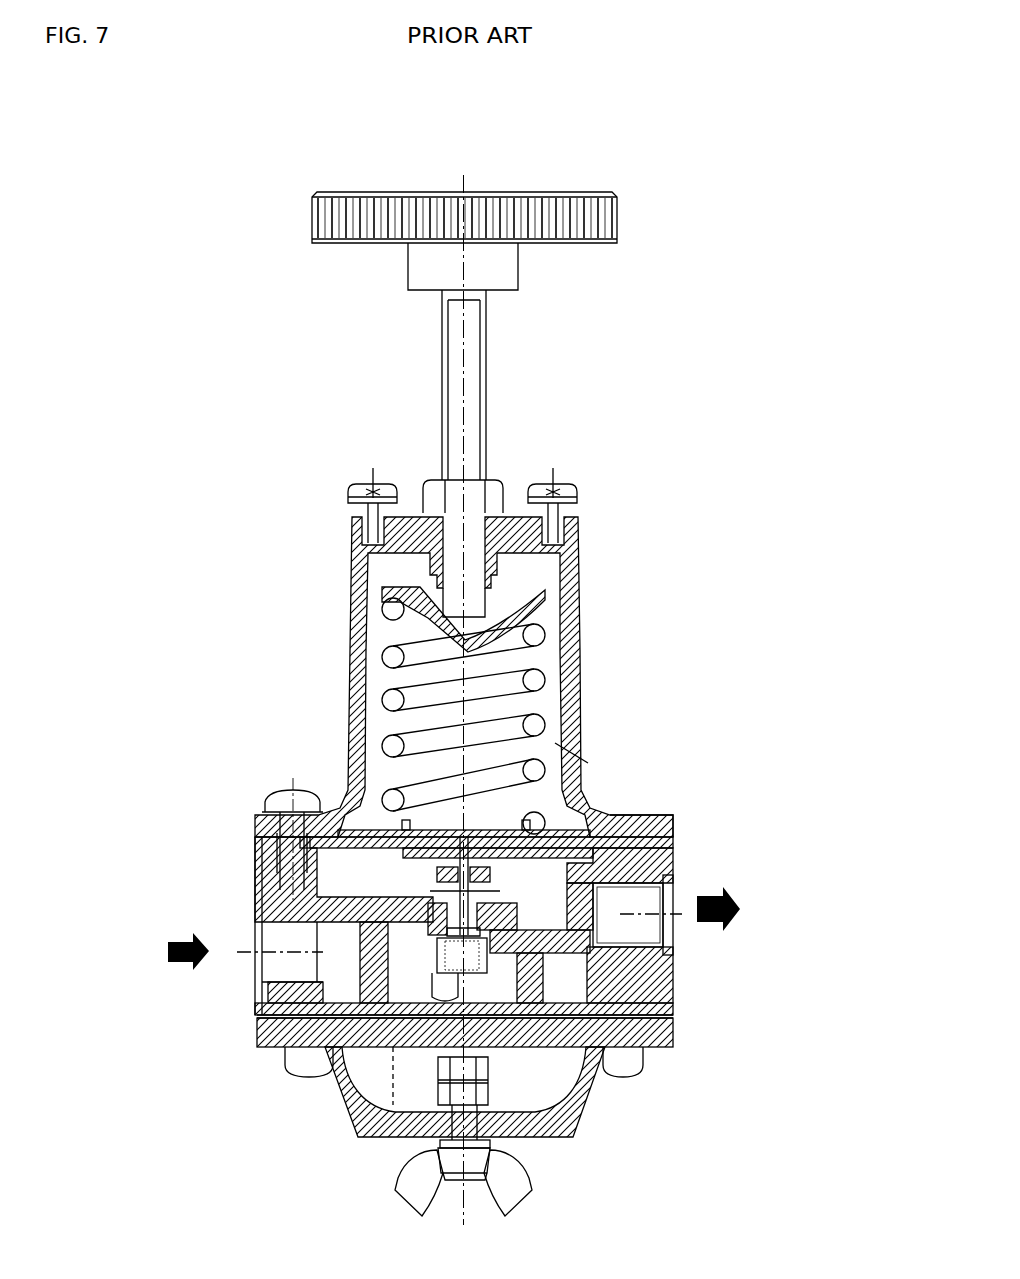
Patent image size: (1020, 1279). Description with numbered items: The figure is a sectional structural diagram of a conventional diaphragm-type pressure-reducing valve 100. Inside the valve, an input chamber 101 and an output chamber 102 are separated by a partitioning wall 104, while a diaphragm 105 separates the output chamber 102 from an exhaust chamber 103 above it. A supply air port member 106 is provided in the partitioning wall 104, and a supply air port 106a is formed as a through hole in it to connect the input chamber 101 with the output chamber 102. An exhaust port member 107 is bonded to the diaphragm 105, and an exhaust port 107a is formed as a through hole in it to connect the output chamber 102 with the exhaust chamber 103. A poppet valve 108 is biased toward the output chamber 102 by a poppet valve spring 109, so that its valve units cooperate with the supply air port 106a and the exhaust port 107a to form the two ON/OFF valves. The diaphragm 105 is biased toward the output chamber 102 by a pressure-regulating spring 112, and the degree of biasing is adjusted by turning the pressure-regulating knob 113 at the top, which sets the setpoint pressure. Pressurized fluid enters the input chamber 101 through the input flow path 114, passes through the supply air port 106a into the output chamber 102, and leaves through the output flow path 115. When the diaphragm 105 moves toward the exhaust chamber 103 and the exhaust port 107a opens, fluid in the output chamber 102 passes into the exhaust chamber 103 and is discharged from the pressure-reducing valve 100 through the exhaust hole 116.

The pressure-reducing valve 100 is at (729, 142).
The input chamber 101 is at (547, 1047).
The output chamber 102 is at (337, 873).
The exhaust chamber 103 is at (380, 672).
The partitioning wall 104 is at (673, 868).
The diaphragm 105 is at (583, 803).
The supply air port member 106 is at (427, 915).
The supply air port 106a is at (427, 893).
The exhaust port member 107 is at (347, 761).
The exhaust port 107a is at (452, 838).
The poppet valve 108 is at (673, 815).
The poppet valve spring 109 is at (452, 958).
The pressure-regulating spring 112 is at (577, 604).
The pressure-regulating knob 113 is at (597, 217).
The input flow path 114 is at (288, 967).
The output flow path 115 is at (643, 907).
The exhaust hole 116 is at (580, 733).